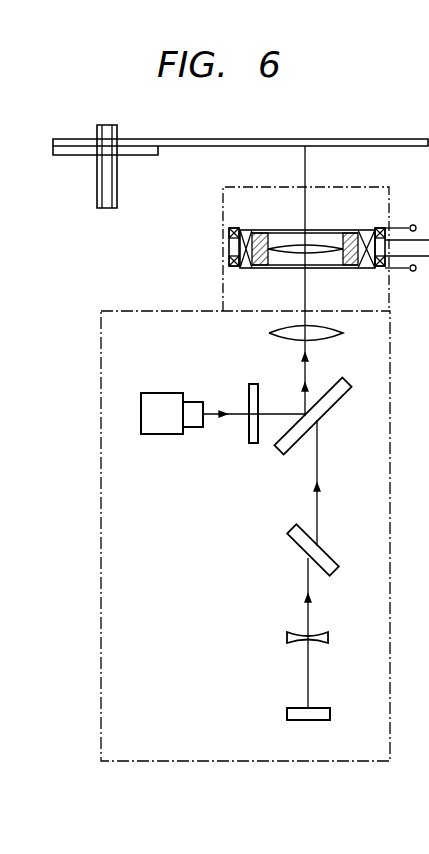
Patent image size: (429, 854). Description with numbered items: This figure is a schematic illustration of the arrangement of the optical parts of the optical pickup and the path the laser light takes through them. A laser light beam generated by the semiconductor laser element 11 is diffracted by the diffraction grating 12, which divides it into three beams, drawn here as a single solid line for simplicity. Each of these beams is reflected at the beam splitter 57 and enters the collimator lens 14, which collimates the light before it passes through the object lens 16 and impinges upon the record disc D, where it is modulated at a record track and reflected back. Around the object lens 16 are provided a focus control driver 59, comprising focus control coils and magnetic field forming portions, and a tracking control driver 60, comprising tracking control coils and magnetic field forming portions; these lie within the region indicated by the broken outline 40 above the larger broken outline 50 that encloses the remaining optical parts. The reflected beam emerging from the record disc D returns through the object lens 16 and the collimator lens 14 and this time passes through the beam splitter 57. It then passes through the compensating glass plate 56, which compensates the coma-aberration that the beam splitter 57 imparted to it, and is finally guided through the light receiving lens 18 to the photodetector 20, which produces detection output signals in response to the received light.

The record disc D is at (227, 137).
The semiconductor laser element 11 is at (153, 434).
The diffraction grating 12 is at (251, 443).
The collimator lens 14 is at (268, 332).
The object lens 16 is at (313, 253).
The light receiving lens 18 is at (320, 644).
The photodetector 20 is at (287, 714).
The rotary optical unit 40 is at (222, 283).
The fixed optical housing 50 is at (101, 712).
The compensating glass plate 56 is at (328, 557).
The beam splitter 57 is at (341, 396).
The focus control driver 59 is at (244, 230).
The tracking control driver 60 is at (230, 234).